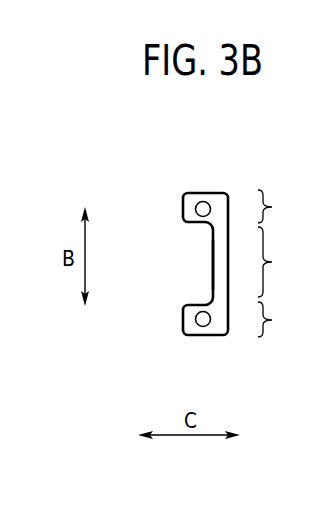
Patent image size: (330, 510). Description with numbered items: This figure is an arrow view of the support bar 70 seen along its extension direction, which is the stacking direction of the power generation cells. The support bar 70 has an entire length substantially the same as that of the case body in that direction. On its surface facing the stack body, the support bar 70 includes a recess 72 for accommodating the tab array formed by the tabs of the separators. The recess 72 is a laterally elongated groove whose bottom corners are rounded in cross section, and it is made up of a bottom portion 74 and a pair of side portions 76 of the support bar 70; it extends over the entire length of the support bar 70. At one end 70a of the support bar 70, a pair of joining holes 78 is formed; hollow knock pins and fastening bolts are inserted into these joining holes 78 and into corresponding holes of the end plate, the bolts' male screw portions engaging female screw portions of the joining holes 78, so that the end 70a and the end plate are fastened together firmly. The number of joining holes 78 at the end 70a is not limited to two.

The support bar 70 is at (183, 130).
The one end of the support bar 70a is at (197, 202).
The recess 72 is at (212, 257).
The bottom portion 74 is at (278, 262).
The side portions 76 is at (278, 263).
The joining holes 78 is at (208, 203).